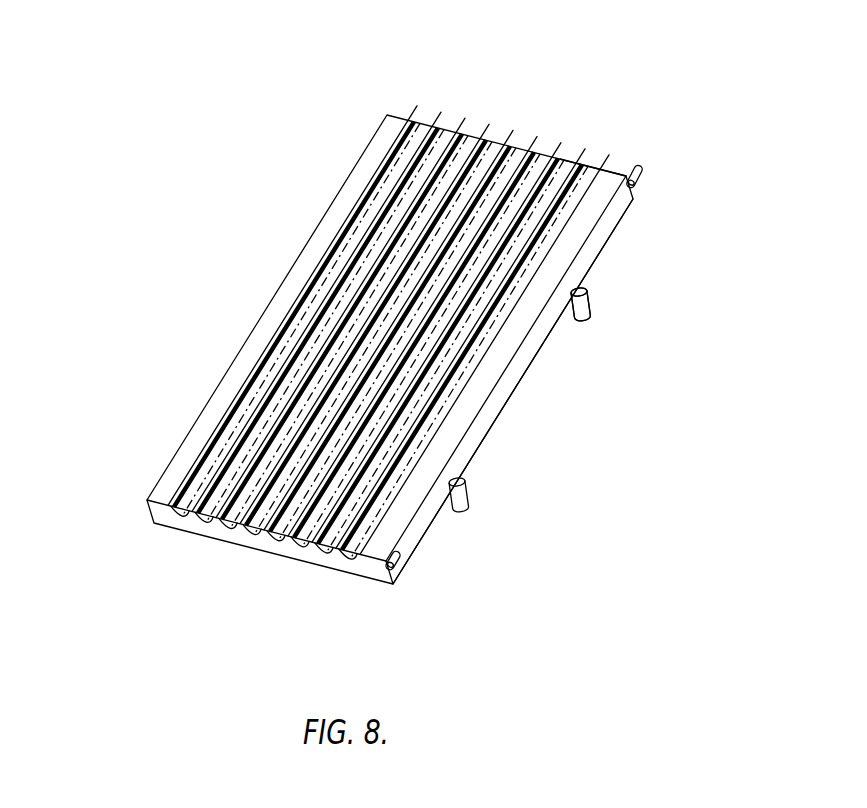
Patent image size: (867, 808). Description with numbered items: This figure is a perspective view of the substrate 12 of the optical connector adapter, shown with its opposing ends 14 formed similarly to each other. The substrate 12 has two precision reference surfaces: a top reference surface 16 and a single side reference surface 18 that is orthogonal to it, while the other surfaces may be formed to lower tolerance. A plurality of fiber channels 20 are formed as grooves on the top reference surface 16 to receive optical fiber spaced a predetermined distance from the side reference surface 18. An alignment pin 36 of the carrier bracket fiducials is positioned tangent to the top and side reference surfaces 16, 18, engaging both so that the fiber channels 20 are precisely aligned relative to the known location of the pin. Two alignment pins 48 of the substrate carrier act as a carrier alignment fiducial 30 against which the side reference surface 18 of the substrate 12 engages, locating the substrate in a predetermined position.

The substrate 12 is at (243, 296).
The opposing ends 14 is at (403, 116).
The top reference surface 16 is at (641, 167).
The side reference surface 18 is at (519, 371).
The fiber channels 20 is at (560, 150).
The carrier alignment fiducials 30 is at (603, 308).
The alignment pin 36 is at (645, 173).
The alignment pins 48 is at (585, 322).